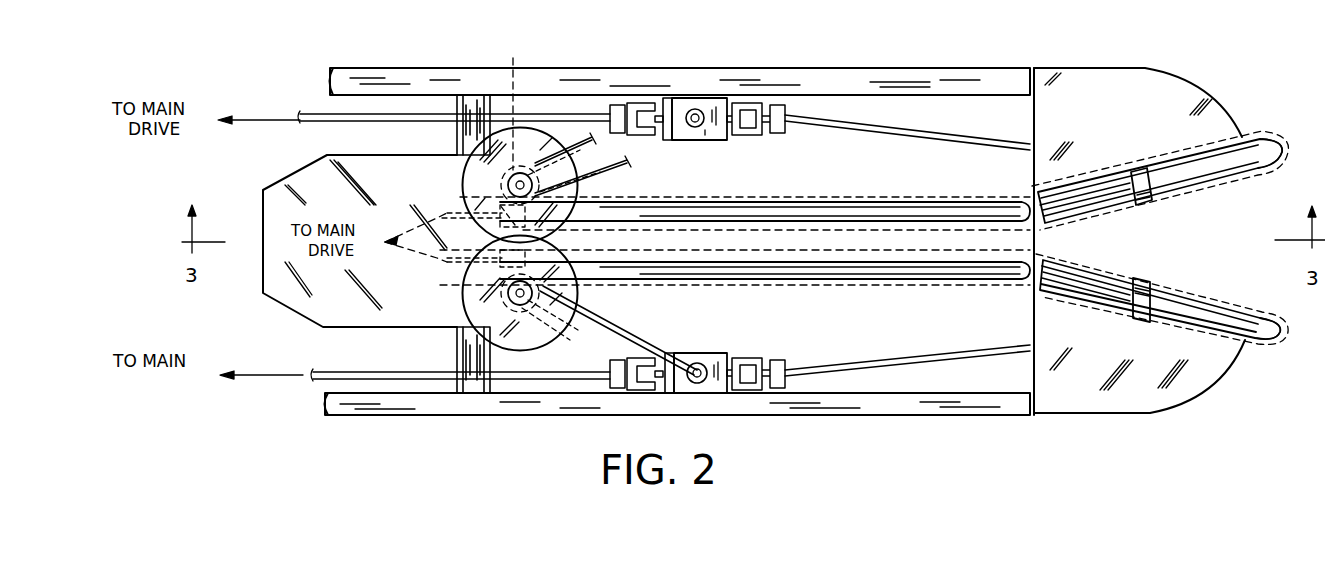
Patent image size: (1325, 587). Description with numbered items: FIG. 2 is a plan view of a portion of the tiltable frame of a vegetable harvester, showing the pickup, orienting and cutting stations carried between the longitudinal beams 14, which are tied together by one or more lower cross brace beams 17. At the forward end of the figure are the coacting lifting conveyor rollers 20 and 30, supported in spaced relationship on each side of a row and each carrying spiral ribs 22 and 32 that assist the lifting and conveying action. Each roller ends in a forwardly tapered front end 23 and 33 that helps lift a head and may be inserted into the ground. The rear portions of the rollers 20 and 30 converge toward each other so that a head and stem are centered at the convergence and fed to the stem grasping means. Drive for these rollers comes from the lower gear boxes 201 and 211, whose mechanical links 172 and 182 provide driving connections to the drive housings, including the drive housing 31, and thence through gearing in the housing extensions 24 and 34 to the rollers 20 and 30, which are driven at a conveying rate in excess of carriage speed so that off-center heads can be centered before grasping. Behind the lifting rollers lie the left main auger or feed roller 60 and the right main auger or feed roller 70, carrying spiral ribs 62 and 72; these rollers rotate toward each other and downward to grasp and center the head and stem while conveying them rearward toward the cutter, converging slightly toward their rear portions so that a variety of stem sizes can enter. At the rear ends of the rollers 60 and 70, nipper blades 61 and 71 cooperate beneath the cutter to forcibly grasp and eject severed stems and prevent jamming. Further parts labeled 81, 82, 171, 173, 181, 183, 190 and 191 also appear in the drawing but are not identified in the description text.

The longitudinal beams 14 is at (870, 76).
The lower cross brace beams 17 is at (513, 58).
The lifting conveyor roller 20 is at (1222, 283).
The spiral ribs 22 is at (1093, 265).
The forwardly tapered front end 23 is at (1267, 327).
The housing extension 24 is at (1147, 273).
The lifting conveyor roller 30 is at (1195, 172).
The drive housing 31 is at (1197, 103).
The spiral ribs 32 is at (1100, 213).
The forwardly tapered front end 33 is at (1270, 147).
The housing extension 34 is at (1145, 200).
The left main auger or feed roller 60 is at (835, 270).
The nipper blades 61 is at (465, 275).
The spiral ribs 62 is at (905, 285).
The right main auger or feed roller 70 is at (810, 205).
The nipper blades 71 is at (465, 178).
The spiral ribs 72 is at (875, 197).
The lower cam wheel 81 is at (468, 300).
The upper cam wheel 82 is at (465, 205).
The lower drive shaft 171 is at (365, 372).
The mechanical link 172 is at (966, 348).
The lower crank pin 173 is at (712, 358).
The upper drive shaft 181 is at (360, 121).
The mechanical link 182 is at (950, 145).
The upper crank pin 183 is at (700, 126).
The lower link 190 is at (612, 318).
The upper link 191 is at (615, 168).
The lower gear box 201 is at (704, 353).
The lower gear box 211 is at (697, 100).